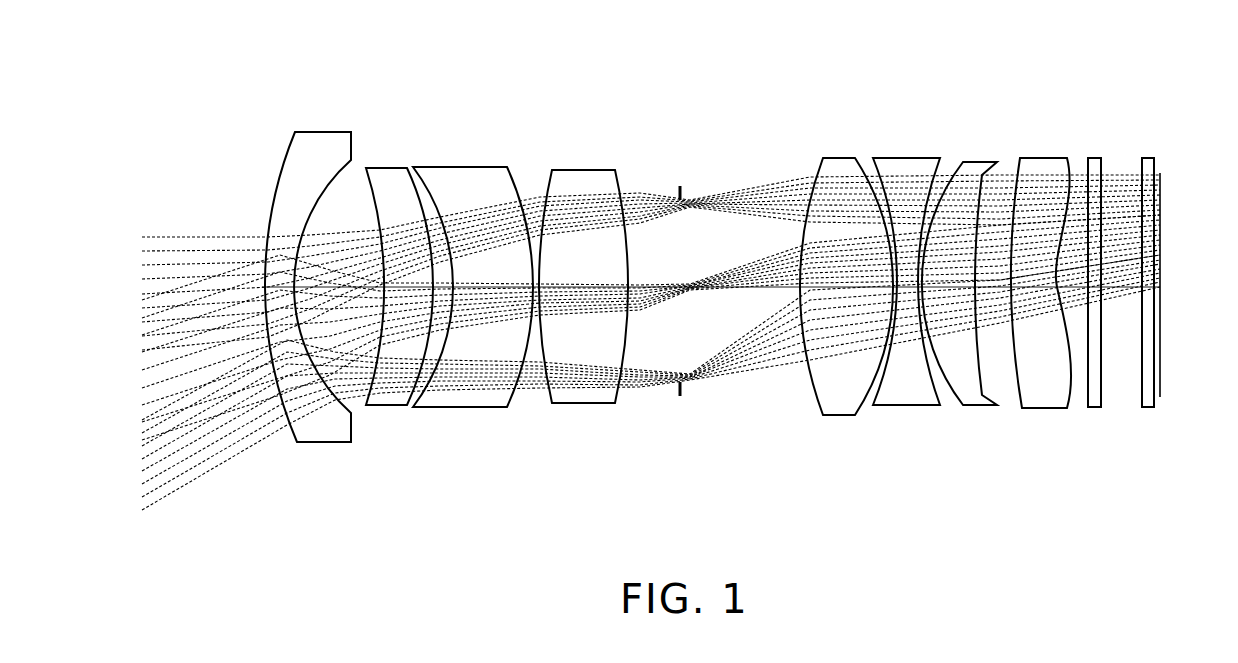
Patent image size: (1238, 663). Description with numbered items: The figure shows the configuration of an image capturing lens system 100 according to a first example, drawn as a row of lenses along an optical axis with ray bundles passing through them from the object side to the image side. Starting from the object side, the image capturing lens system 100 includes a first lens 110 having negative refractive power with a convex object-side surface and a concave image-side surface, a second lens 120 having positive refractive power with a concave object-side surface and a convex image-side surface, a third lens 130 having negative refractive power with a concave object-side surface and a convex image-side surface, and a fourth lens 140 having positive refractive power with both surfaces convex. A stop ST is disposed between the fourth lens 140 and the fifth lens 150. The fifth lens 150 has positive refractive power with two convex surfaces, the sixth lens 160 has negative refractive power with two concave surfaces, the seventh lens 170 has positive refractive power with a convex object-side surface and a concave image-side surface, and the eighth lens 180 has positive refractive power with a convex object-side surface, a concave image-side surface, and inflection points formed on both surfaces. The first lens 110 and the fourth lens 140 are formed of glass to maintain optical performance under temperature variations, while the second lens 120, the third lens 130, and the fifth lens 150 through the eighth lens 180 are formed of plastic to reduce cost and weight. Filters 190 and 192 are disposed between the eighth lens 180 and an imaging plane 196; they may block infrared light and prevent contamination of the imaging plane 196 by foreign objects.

The image capturing lens system 100 is at (643, 108).
The first lens 110 is at (323, 444).
The second lens 120 is at (385, 407).
The third lens 130 is at (466, 409).
The fourth lens 140 is at (583, 405).
The stop ST is at (681, 184).
The fifth lens 150 is at (838, 417).
The sixth lens 160 is at (908, 407).
The seventh lens 170 is at (975, 407).
The eighth lens 180 is at (1043, 409).
The filter 190 is at (1100, 409).
The filter 192 is at (1152, 409).
The imaging plane 196 is at (1161, 384).